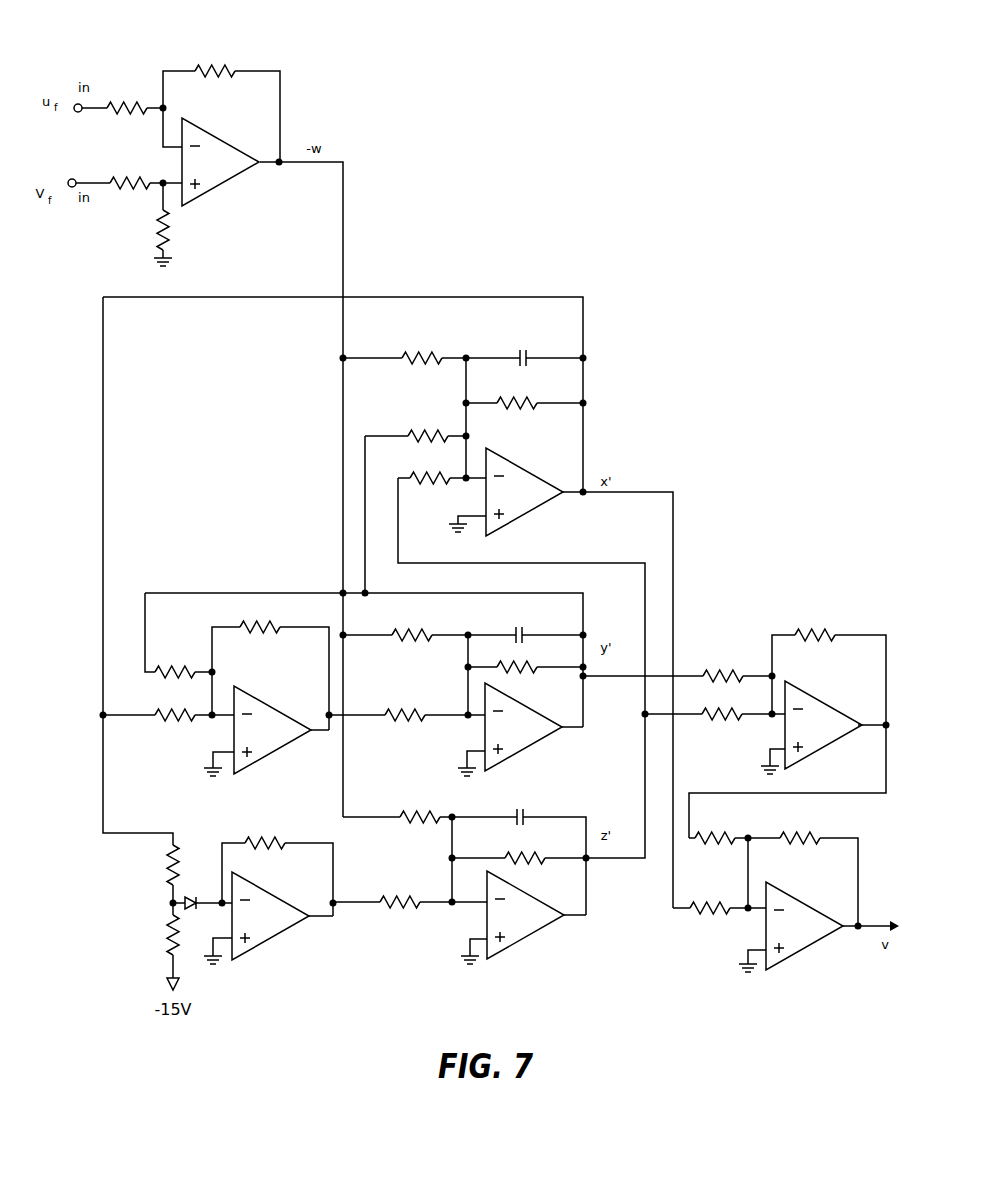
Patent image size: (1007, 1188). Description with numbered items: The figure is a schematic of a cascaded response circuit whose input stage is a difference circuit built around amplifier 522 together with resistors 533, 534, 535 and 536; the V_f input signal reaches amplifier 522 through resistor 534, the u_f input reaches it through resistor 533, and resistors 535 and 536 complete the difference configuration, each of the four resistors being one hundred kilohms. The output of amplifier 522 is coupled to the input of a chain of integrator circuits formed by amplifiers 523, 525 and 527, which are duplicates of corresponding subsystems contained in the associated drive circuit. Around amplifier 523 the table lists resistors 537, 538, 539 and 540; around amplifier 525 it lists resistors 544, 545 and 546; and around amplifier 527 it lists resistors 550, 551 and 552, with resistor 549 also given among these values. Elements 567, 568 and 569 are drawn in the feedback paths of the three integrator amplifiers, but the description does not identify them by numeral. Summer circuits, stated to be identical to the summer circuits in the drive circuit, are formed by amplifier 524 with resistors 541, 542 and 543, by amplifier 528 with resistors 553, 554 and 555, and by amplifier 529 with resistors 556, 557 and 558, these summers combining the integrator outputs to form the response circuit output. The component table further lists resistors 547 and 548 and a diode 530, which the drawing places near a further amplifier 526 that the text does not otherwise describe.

The amplifier 522 is at (217, 187).
The amplifier 523 is at (543, 507).
The amplifier 524 is at (268, 755).
The amplifier 525 is at (530, 750).
The operational amplifier a16 526 is at (275, 938).
The amplifier 527 is at (527, 942).
The amplifier 528 is at (818, 752).
The amplifier 529 is at (790, 960).
The diode 530 is at (195, 892).
The resistor 533 is at (132, 100).
The resistor 534 is at (127, 180).
The resistor 535 is at (222, 68).
The resistor 536 is at (173, 227).
The resistor 537 is at (418, 350).
The resistor 538 is at (427, 430).
The resistor 539 is at (515, 404).
The resistor 540 is at (424, 478).
The resistor 541 is at (170, 668).
The resistor 542 is at (162, 722).
The resistor 543 is at (265, 630).
The resistor 544 is at (405, 633).
The resistor 545 is at (398, 722).
The resistor 546 is at (523, 678).
The resistor 547 is at (168, 863).
The resistor 548 is at (168, 947).
The resistor 549 is at (260, 840).
The resistor 550 is at (420, 812).
The resistor 551 is at (392, 892).
The resistor 552 is at (527, 862).
The resistor 553 is at (718, 668).
The resistor 554 is at (722, 717).
The resistor 555 is at (806, 628).
The resistor 556 is at (720, 835).
The resistor 557 is at (714, 900).
The resistor 558 is at (802, 836).
The capacitor 567 is at (529, 348).
The capacitor 568 is at (522, 632).
The capacitor 569 is at (525, 812).